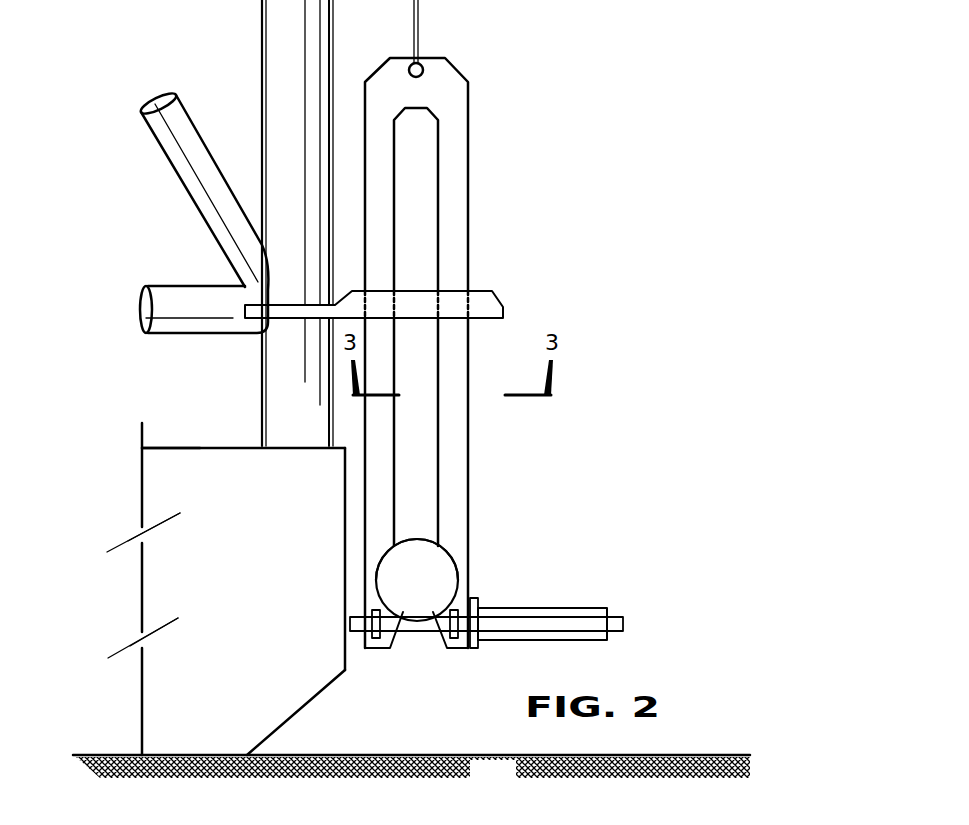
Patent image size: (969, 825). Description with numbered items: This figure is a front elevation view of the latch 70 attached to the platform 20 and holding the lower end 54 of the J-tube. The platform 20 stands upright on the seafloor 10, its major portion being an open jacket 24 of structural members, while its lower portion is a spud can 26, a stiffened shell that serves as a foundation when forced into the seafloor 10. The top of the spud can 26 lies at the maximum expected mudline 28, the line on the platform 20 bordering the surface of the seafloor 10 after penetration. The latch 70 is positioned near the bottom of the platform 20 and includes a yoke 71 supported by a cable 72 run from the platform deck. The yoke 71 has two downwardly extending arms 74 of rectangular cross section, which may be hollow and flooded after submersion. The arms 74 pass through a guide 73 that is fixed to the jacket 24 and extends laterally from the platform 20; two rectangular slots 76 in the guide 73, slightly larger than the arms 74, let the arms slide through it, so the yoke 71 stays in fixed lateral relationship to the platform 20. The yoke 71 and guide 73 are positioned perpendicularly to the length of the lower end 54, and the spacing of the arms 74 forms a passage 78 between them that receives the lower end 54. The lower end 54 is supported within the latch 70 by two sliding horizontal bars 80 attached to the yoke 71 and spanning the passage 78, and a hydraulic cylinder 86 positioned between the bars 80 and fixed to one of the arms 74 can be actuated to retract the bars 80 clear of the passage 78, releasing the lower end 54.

The seafloor 10 is at (411, 772).
The platform 20 is at (122, 208).
The open jacket 24 is at (300, 83).
The spud can 26 is at (259, 593).
The maximum expected mudline 28 is at (180, 445).
The lower end of J-tube 54 is at (429, 597).
The latch 70 is at (565, 147).
The yoke 71 is at (455, 90).
The cable 72 is at (417, 37).
The guide 73 is at (503, 300).
The yoke arms 74 is at (378, 222).
The rectangular slots 76 is at (376, 290).
The passage 78 is at (418, 530).
The sliding horizontal bars 80 is at (405, 633).
The hydraulic cylinder 86 is at (575, 612).